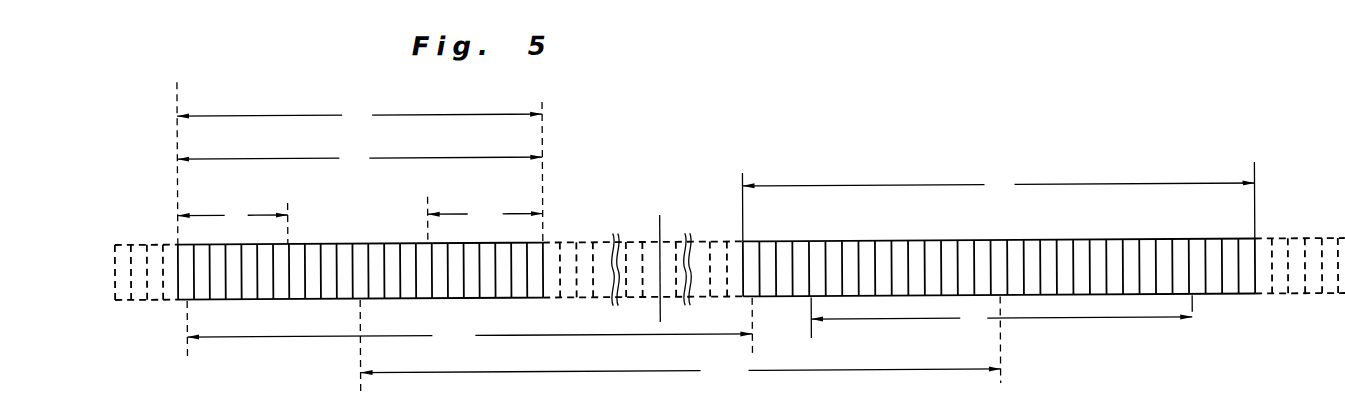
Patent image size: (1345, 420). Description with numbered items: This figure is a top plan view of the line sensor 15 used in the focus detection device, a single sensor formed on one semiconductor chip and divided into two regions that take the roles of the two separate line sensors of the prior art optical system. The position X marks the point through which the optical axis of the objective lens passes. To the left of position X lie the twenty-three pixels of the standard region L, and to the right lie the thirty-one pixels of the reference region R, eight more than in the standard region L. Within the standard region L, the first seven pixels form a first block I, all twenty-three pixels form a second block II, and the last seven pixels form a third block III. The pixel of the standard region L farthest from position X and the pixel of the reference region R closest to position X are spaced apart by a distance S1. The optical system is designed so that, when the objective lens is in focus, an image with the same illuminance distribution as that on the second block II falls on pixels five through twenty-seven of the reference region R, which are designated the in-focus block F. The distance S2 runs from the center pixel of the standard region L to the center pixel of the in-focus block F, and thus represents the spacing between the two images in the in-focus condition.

The line sensor 15 is at (700, 230).
The optical axis position X is at (660, 229).
The standard region L is at (360, 162).
The reference region R is at (998, 201).
The first block I is at (233, 224).
The second block II is at (359, 158).
The third block III is at (485, 219).
The distance S1 is at (469, 328).
The distance S2 is at (680, 344).
The in-focus block F is at (1001, 316).